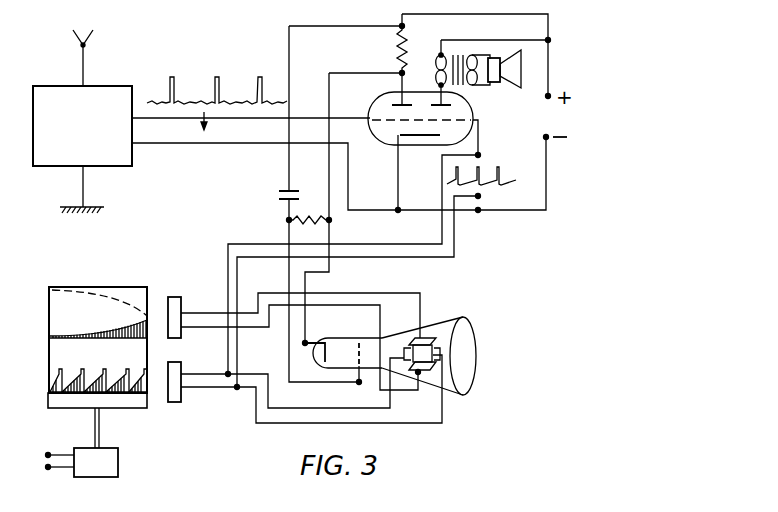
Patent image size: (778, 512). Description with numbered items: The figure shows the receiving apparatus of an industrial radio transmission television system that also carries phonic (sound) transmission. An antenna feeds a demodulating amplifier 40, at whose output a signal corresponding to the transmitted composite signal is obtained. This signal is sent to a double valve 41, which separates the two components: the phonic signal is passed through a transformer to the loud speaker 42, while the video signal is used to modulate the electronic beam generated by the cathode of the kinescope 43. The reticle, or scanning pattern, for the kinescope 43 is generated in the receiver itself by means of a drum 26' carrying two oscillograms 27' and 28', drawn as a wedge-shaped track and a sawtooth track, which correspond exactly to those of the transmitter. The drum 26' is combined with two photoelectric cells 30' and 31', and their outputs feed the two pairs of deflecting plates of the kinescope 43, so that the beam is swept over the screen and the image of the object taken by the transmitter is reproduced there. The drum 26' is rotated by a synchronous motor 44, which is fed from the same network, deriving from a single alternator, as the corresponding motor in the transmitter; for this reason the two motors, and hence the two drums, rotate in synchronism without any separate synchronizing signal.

The demodulating amplifier 40 is at (121, 95).
The double valve 41 is at (388, 132).
The loud speaker 42 is at (494, 82).
The kinescope 43 is at (341, 343).
The synchronous motor 44 is at (118, 463).
The drum 26' is at (81, 347).
The oscillogram 27' is at (98, 301).
The oscillogram 28' is at (81, 380).
The photoelectric cell 30' is at (185, 305).
The photoelectric cell 31' is at (187, 392).